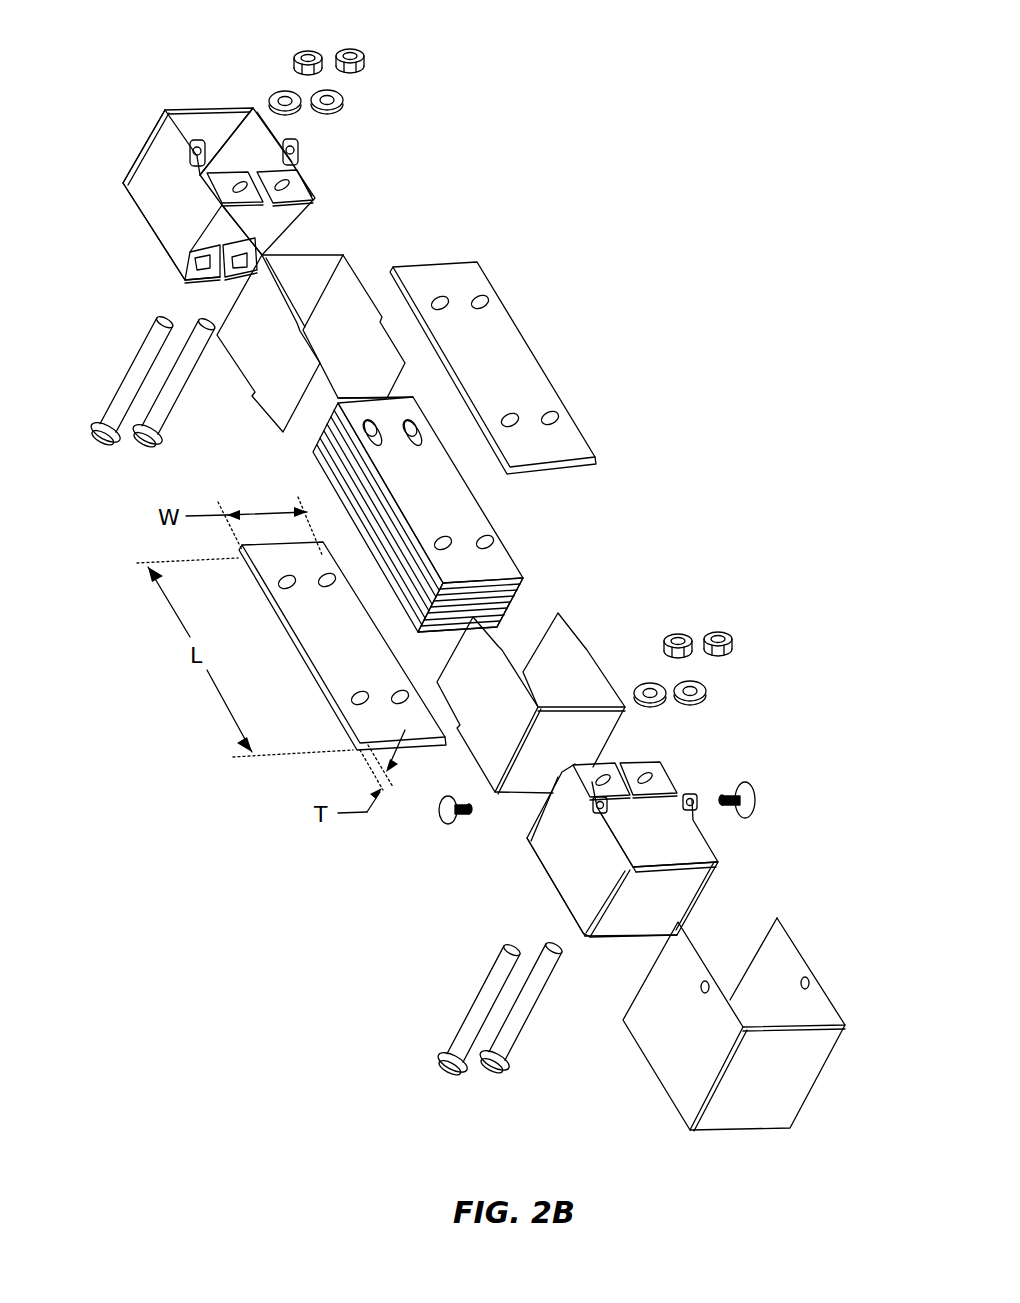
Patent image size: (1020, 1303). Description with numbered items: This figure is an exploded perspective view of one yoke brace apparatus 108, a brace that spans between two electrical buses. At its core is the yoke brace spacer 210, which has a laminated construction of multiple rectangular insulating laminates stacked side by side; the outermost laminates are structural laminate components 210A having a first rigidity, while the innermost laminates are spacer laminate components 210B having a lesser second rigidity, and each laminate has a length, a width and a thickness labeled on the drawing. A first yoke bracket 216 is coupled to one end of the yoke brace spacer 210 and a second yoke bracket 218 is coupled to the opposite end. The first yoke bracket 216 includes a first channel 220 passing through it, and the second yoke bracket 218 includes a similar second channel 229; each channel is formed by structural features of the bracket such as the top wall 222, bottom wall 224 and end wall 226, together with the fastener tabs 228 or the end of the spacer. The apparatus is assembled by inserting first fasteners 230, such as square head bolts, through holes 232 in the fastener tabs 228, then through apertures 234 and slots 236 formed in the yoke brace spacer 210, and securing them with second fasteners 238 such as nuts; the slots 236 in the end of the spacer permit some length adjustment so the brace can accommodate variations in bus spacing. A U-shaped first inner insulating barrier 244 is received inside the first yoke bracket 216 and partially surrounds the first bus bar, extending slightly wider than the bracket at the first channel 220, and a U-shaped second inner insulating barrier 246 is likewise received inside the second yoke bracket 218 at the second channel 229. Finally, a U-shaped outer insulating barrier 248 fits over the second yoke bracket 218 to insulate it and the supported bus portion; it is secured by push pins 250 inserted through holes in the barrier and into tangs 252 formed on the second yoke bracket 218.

The yoke brace apparatus 108 is at (614, 218).
The first yoke bracket 216 is at (205, 95).
The second yoke bracket 218 is at (530, 876).
The first channel 220 is at (268, 140).
The top wall 222 is at (172, 213).
The bottom wall 224 is at (268, 162).
The end wall 226 is at (203, 127).
The fastener tabs 228 is at (223, 192).
The second channel 229 is at (690, 840).
The first fasteners 230 is at (141, 445).
The holes 232 is at (444, 308).
The apertures 234 is at (447, 538).
The slots 236 is at (415, 460).
The second fasteners 238 is at (311, 48).
The first inner insulating barrier 244 is at (345, 257).
The second inner insulating barrier 246 is at (583, 642).
The outer insulating barrier 248 is at (800, 953).
The push pins 250 is at (757, 792).
The tangs 252 is at (710, 783).
The yoke brace spacer 210 is at (520, 257).
The structural laminate components 210A is at (593, 468).
The spacer laminate components 210B is at (513, 600).